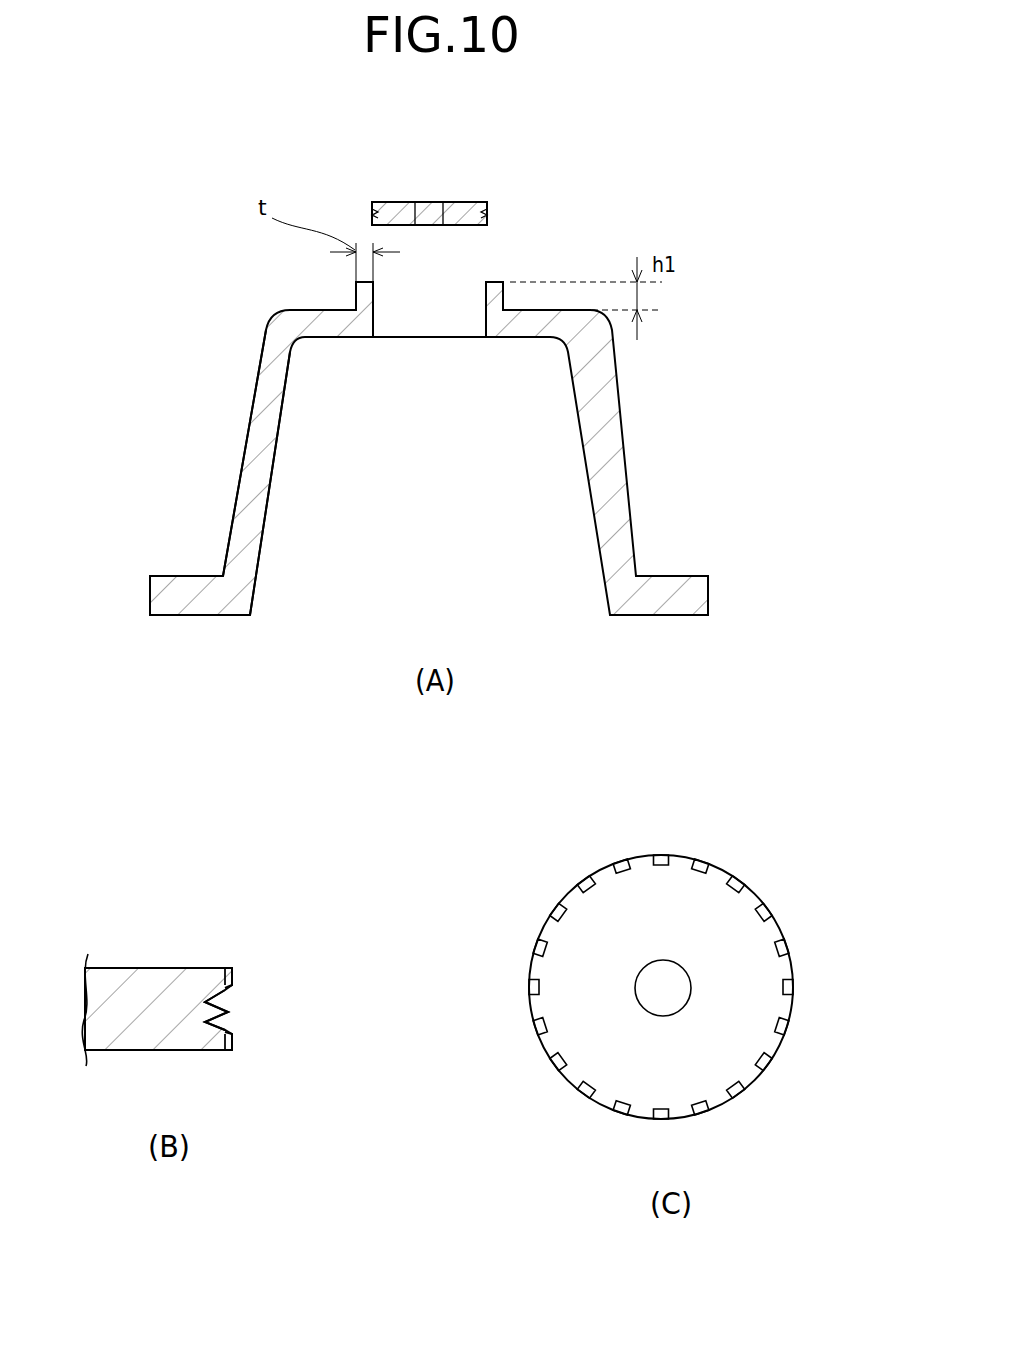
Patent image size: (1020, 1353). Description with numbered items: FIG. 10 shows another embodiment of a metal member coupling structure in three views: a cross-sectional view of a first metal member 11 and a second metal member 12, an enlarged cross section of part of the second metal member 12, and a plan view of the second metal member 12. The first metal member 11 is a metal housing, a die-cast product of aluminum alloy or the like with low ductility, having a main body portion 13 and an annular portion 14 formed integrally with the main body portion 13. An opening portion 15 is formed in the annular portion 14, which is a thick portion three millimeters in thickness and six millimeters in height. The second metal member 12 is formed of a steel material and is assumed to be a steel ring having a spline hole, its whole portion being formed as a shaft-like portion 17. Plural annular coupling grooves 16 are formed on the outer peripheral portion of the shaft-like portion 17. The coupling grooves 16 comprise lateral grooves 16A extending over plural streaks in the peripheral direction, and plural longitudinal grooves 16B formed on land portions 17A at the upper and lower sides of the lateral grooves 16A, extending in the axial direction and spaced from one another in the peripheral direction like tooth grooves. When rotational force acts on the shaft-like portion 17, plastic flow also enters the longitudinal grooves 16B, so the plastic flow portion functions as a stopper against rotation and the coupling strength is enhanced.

The first metal member 11 is at (429, 421).
The second metal member 12 is at (460, 637).
The main body portion 13 is at (250, 407).
The annular portion 14 is at (355, 288).
The opening portion 15 is at (482, 296).
The coupling grooves 16 is at (522, 1000).
The lateral grooves 16A is at (228, 1003).
The longitudinal grooves 16B is at (232, 984).
The shaft-like portion 17 is at (372, 216).
The land portions 17A is at (232, 973).